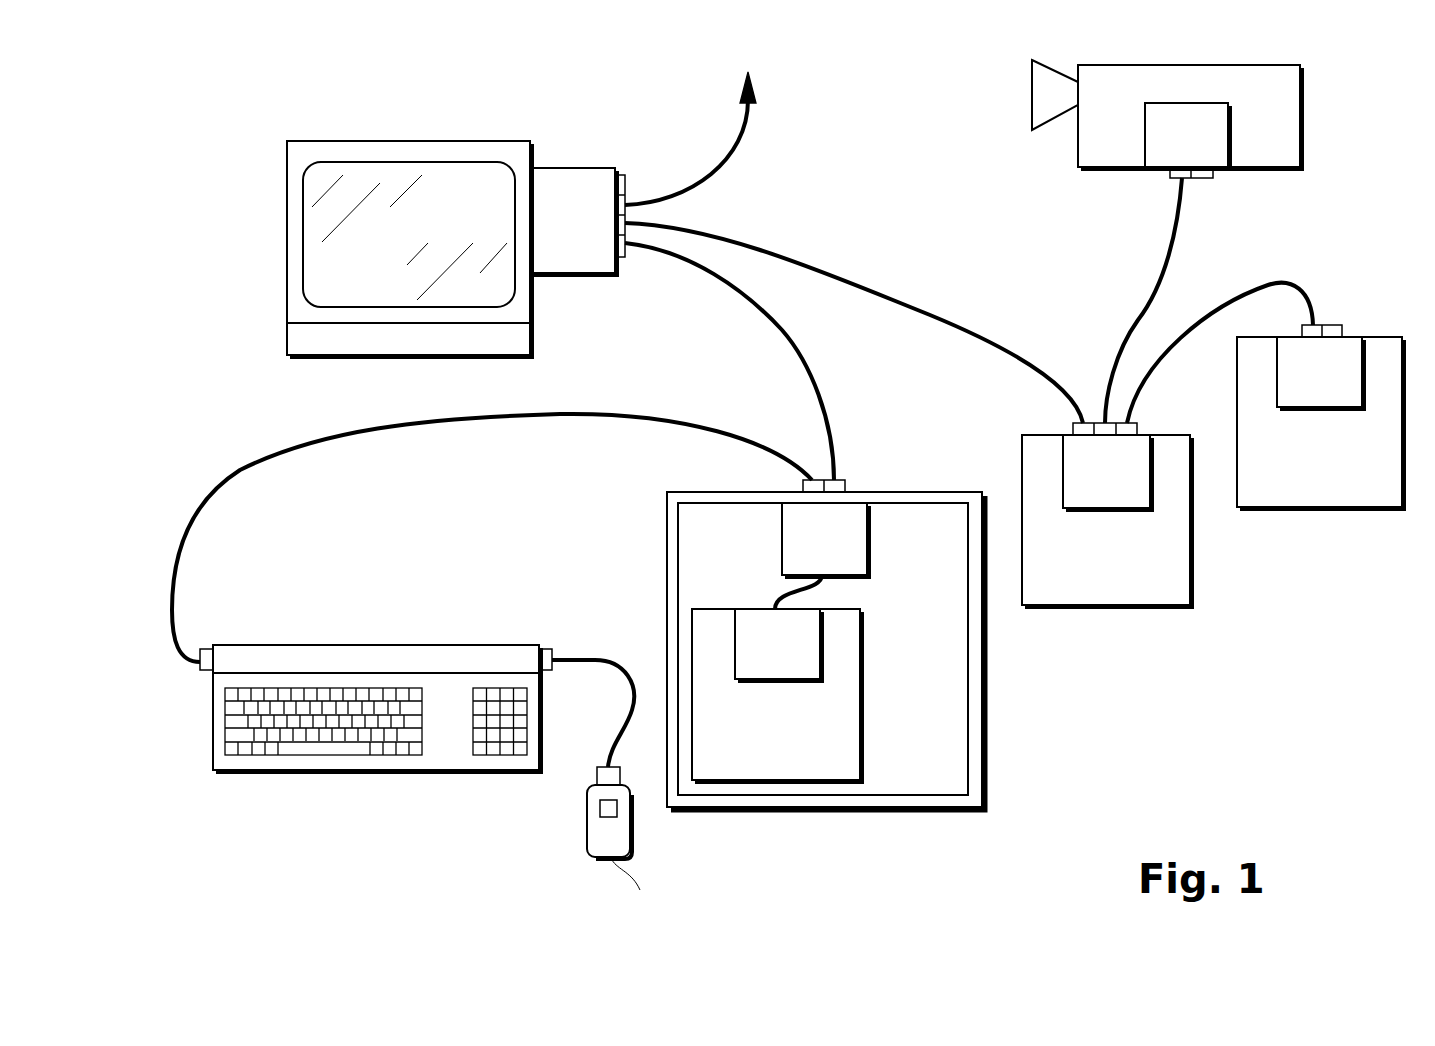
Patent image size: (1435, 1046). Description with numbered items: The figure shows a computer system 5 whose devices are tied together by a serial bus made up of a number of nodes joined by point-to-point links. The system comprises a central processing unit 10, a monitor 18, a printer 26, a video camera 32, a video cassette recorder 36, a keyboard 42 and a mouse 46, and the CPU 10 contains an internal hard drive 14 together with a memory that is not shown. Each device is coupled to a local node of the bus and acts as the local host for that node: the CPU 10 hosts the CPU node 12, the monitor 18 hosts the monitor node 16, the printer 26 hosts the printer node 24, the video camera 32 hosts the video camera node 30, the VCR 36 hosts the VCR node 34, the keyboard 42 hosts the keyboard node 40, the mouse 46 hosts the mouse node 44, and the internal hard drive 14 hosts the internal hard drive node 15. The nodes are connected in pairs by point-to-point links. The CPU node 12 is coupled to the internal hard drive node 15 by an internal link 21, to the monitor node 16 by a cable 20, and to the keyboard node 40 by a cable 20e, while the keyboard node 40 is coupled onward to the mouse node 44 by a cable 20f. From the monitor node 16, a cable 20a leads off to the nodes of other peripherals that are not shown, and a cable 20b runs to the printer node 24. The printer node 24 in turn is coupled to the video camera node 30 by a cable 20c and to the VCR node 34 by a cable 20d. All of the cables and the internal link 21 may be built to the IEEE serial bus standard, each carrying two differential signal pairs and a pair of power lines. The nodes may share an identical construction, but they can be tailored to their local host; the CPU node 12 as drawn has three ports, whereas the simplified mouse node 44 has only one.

The computer system 5 is at (1266, 747).
The central processing unit 10 is at (935, 783).
The CPU node 12 is at (835, 570).
The internal hard drive 14 is at (827, 772).
The internal hard drive node 15 is at (786, 672).
The monitor node 16 is at (579, 263).
The monitor 18 is at (479, 290).
The cable 20 is at (797, 356).
The cable 20a is at (720, 163).
The cable 20b is at (866, 282).
The cable 20c is at (1133, 311).
The cable 20d is at (1150, 358).
The cable 20e is at (542, 420).
The cable 20f is at (597, 656).
The internal link 21 is at (773, 603).
The printer node 24 is at (1116, 500).
The printer 26 is at (1155, 598).
The video camera node 30 is at (1198, 160).
The video camera 32 is at (1267, 157).
The VCR node 34 is at (1330, 400).
The video cassette recorder 36 is at (1371, 498).
The keyboard node 40 is at (500, 668).
The keyboard 42 is at (436, 759).
The mouse node 44 is at (595, 778).
The mouse 46 is at (596, 850).